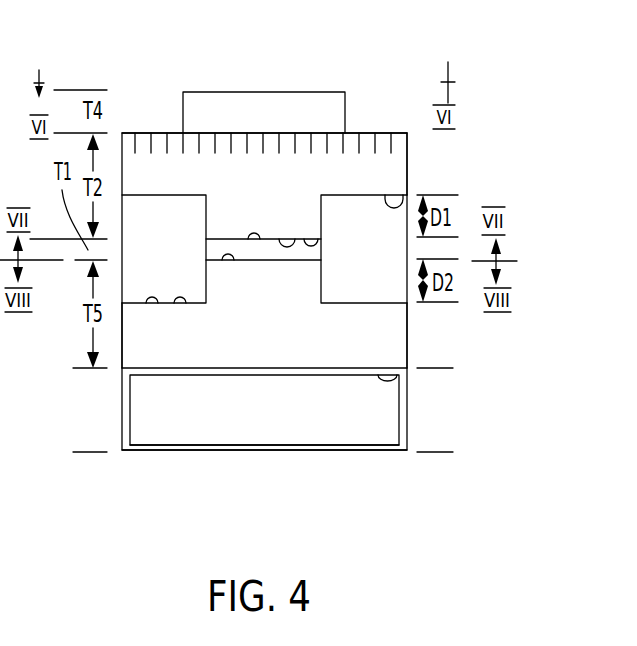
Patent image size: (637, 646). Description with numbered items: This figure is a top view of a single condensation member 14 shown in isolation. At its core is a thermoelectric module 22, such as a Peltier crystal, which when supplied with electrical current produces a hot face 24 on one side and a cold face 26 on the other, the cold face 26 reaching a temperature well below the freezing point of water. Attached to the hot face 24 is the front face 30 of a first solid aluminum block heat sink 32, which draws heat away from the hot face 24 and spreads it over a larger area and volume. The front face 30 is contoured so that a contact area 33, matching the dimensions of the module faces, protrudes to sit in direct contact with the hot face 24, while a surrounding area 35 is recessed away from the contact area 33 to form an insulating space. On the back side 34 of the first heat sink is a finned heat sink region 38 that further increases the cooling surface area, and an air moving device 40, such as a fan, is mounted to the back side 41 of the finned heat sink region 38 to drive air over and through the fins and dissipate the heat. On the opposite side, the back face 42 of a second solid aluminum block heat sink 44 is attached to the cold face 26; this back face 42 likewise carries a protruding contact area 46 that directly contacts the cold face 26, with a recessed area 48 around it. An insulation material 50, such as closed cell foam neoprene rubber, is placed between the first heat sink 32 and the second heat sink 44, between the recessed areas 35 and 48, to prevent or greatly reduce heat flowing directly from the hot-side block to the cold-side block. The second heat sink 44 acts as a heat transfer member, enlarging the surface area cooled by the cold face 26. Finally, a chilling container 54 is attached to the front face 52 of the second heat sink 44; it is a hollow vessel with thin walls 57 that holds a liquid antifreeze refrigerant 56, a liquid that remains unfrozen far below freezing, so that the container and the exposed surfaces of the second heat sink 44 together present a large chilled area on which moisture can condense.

The condensation member 14 is at (470, 391).
The thermoelectric module 22 is at (296, 367).
The hot face 24 is at (295, 366).
The cold face 26 is at (287, 390).
The front face 30 is at (292, 238).
The first solid aluminum block heat sink 32 is at (345, 187).
The contact area 33 is at (307, 243).
The back side 34 is at (350, 132).
The recessed area 35 is at (389, 205).
The finned heat sink region 38 is at (152, 157).
The air moving device 40 is at (245, 105).
The back side of finned heat sink region 41 is at (155, 133).
The back face 42 is at (177, 313).
The second solid aluminum block heat sink 44 is at (198, 337).
The contact area 46 is at (269, 388).
The recessed area 48 is at (143, 307).
The insulation material 50 is at (360, 297).
The front face 52 is at (395, 375).
The chilling container 54 is at (287, 447).
The liquid antifreeze refrigerant 56 is at (393, 432).
The walls 57 is at (390, 452).